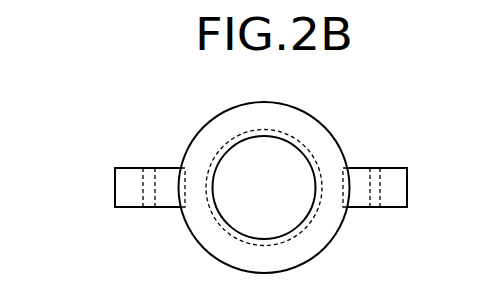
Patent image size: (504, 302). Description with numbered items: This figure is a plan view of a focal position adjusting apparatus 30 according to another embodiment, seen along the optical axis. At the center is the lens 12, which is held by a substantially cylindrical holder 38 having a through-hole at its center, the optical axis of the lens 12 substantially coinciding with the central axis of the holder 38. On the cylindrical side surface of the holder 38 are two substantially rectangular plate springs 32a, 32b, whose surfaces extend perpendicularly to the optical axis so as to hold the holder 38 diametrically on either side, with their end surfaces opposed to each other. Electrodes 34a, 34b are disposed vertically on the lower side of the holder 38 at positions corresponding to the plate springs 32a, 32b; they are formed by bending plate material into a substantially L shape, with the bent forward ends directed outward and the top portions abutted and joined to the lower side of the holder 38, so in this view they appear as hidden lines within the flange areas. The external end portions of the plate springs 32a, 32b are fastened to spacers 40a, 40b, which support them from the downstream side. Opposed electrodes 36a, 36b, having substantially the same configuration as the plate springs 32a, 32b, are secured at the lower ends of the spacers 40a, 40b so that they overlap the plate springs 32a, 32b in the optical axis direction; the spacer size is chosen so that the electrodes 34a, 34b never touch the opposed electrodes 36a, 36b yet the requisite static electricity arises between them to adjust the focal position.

The adjusting apparatus 30 is at (341, 125).
The lens 12 is at (250, 152).
The holder 38 is at (205, 137).
The plate spring 32a is at (123, 173).
The plate spring 32b is at (402, 195).
The electrode 34a is at (167, 203).
The electrode 34b is at (357, 208).
The opposed electrode 36a is at (143, 190).
The opposed electrode 36b is at (380, 207).
The spacer 40a is at (115, 188).
The spacer 40b is at (393, 162).